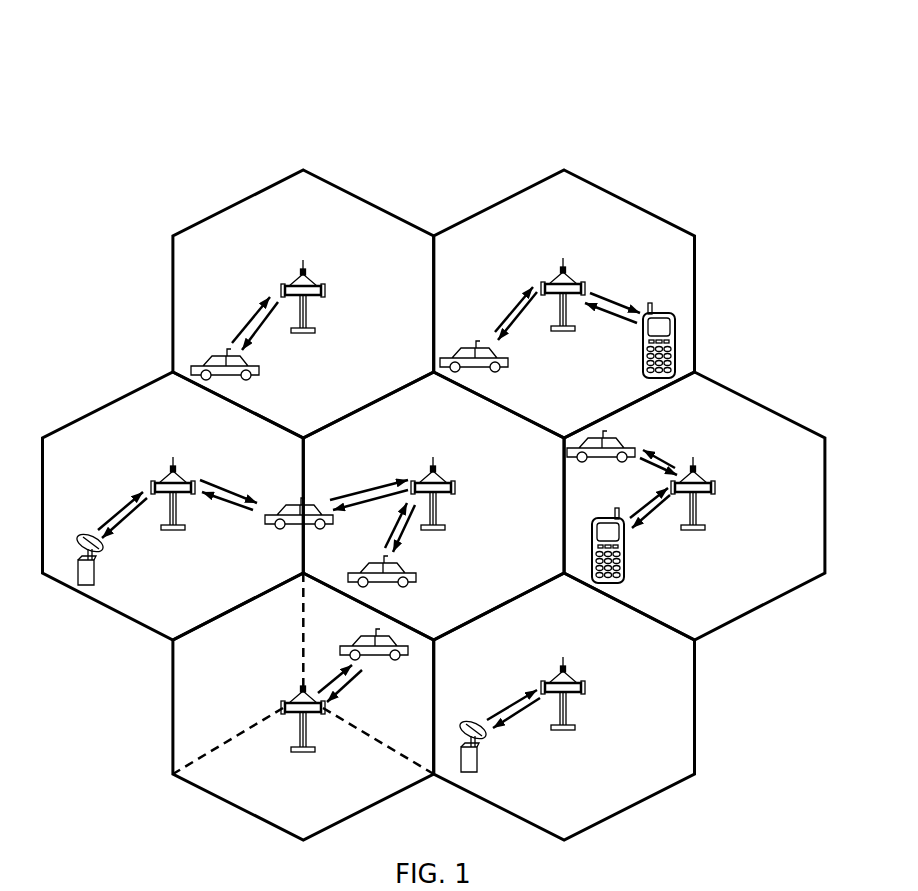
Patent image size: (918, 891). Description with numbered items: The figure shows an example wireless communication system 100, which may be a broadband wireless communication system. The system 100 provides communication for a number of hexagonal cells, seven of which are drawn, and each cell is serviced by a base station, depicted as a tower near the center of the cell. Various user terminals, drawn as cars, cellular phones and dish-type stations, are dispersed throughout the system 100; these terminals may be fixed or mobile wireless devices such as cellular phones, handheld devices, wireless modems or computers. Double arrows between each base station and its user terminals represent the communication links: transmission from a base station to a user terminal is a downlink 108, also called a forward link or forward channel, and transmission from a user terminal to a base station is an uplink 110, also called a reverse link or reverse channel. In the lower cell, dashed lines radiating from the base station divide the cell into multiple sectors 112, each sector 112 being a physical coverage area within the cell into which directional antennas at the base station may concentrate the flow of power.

The wireless communication system 100 is at (622, 76).
The downlink 108 is at (258, 336).
The uplink 110 is at (253, 318).
The sector 112 is at (350, 803).